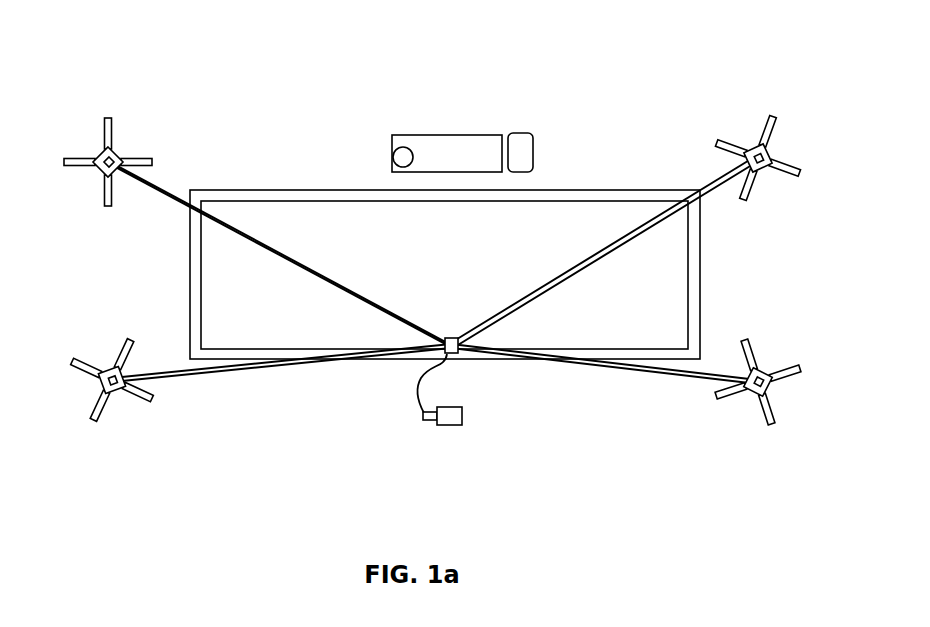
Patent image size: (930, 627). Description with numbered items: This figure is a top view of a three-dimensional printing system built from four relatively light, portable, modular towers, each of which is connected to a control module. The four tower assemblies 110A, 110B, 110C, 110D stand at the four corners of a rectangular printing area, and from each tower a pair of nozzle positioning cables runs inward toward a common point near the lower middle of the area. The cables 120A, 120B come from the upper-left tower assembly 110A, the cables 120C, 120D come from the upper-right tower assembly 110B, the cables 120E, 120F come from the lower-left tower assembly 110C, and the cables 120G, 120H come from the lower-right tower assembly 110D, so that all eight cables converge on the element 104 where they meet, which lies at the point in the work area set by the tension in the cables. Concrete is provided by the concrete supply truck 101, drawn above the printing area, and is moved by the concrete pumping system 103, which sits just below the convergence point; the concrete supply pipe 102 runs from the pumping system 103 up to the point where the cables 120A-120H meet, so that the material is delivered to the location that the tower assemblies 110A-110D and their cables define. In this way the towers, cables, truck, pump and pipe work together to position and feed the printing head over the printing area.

The concrete supply truck 101 is at (447, 136).
The concrete supply pipe 102 is at (408, 408).
The concrete pumping system 103 is at (450, 430).
The hub / base station 104 is at (463, 367).
The tower assembly 110A is at (113, 115).
The tower assembly 110B is at (775, 112).
The tower assembly 110C is at (98, 434).
The tower assembly 110D is at (770, 429).
The nozzle positioning cable 120A is at (163, 174).
The nozzle positioning cable 120B is at (230, 221).
The nozzle positioning cable 120C is at (577, 259).
The nozzle positioning cable 120D is at (686, 204).
The nozzle positioning cable 120E is at (222, 376).
The nozzle positioning cable 120F is at (295, 374).
The nozzle positioning cable 120G is at (565, 365).
The nozzle positioning cable 120H is at (628, 376).